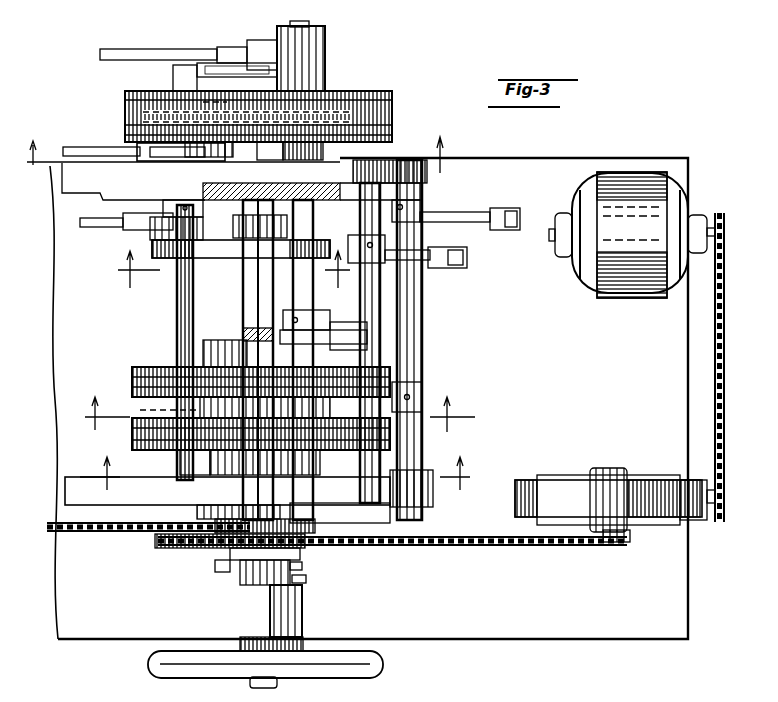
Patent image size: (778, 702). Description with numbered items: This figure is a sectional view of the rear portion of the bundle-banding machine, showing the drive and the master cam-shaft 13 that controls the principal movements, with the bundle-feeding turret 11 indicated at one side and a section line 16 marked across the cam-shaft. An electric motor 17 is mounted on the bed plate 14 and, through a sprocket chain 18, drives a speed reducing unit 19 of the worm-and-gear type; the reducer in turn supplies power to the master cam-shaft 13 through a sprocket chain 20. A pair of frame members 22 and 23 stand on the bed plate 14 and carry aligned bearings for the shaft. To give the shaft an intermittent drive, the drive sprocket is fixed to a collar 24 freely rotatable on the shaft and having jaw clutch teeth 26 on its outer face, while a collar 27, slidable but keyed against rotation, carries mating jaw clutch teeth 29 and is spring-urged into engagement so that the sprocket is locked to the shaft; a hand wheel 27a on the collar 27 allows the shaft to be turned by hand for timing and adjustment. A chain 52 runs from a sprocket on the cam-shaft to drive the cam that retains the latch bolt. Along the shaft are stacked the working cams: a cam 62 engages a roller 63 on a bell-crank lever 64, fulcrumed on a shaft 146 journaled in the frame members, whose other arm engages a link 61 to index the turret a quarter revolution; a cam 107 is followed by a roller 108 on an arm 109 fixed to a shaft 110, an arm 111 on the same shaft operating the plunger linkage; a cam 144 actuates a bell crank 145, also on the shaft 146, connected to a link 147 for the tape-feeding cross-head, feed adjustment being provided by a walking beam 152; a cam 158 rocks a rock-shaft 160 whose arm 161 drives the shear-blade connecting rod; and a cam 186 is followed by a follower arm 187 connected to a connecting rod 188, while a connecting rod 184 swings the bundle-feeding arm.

The bundle-feeding turret 11 is at (283, 473).
The master cam-shaft 13 is at (253, 292).
The bed plate 14 is at (620, 622).
The section line 16- 16 is at (232, 277).
The electric motor 17 is at (590, 265).
The sprocket chain 18 is at (728, 336).
The speed reducing unit 19 is at (572, 493).
The sprocket chain 20 is at (462, 546).
The frame member 22 is at (115, 195).
The frame member 23 is at (165, 495).
The collar 24 is at (215, 565).
The jaw clutch teeth 26 is at (302, 565).
The collar 27 is at (302, 612).
The hand wheel 27a is at (175, 668).
The jaw clutch teeth 29 is at (306, 579).
The chain 52 is at (88, 531).
The link 61 is at (190, 31).
The cam 62 is at (357, 91).
The roller 63 is at (246, 106).
The bell-crank lever 64 is at (173, 70).
The cam 107 is at (205, 395).
The roller 108 is at (155, 405).
The arm 109 is at (418, 372).
The shaft 110 is at (420, 311).
The arm 111 is at (447, 218).
The cam 144 is at (130, 378).
The bell crank 145 is at (217, 347).
The shaft 146 is at (310, 210).
The link 147 is at (340, 326).
The walking beam 152 is at (243, 333).
The cam 158 is at (160, 452).
The rock-shaft 160 is at (377, 292).
The arm 161 is at (430, 236).
The connecting rod 184 is at (108, 146).
The cam 186 is at (240, 258).
The follower arm 187 is at (195, 203).
The connecting rod 188 is at (108, 228).